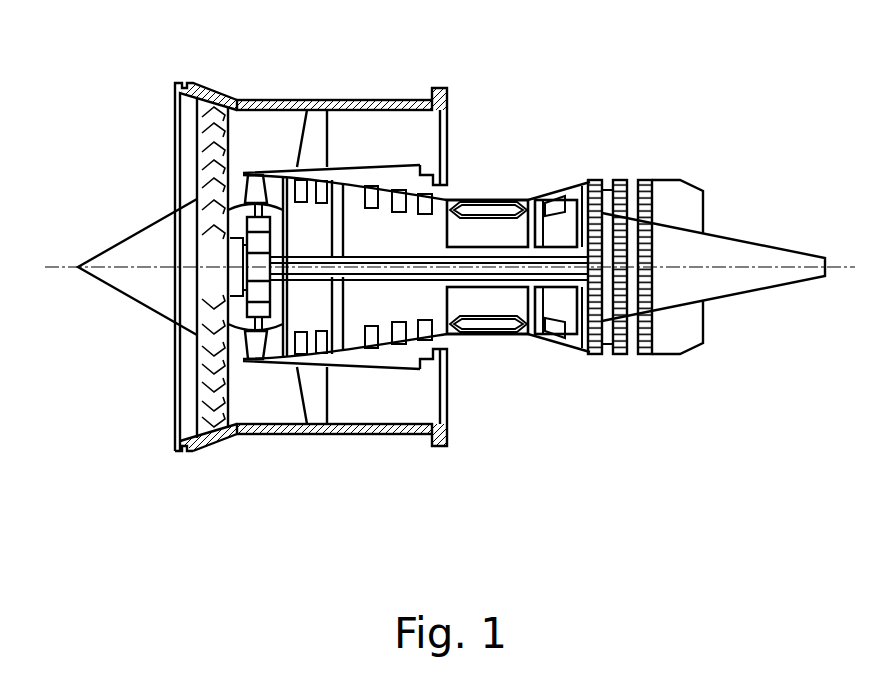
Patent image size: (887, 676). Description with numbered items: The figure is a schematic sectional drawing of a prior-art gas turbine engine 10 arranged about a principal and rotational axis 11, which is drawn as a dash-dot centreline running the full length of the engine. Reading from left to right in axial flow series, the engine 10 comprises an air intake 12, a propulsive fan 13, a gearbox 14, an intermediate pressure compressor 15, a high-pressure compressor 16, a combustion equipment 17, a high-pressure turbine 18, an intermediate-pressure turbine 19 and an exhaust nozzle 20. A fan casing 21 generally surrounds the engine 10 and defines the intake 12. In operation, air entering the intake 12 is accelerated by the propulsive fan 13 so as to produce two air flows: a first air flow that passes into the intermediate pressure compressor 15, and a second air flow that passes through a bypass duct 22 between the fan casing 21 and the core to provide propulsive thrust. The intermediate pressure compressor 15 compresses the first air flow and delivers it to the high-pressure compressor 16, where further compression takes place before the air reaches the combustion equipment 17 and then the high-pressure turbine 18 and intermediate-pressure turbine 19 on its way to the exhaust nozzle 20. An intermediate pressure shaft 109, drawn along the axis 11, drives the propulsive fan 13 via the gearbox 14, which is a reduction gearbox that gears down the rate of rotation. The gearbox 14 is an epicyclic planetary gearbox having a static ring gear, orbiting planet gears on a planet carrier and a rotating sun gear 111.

The gas turbine engine 10 is at (712, 100).
The principal and rotational axis 11 is at (66, 262).
The air intake 12 is at (150, 125).
The propulsive fan 13 is at (200, 387).
The gearbox 14 is at (275, 350).
The intermediate pressure compressor 15 is at (312, 175).
The high-pressure compressor 16 is at (437, 217).
The combustion equipment 17 is at (488, 327).
The high-pressure turbine 18 is at (572, 195).
The intermediate-pressure turbine 19 is at (618, 183).
The exhaust nozzle 20 is at (690, 207).
The fan casing 21 is at (358, 100).
The bypass duct 22 is at (411, 110).
The intermediate pressure shaft 109 is at (378, 283).
The sun gear 111 is at (243, 270).